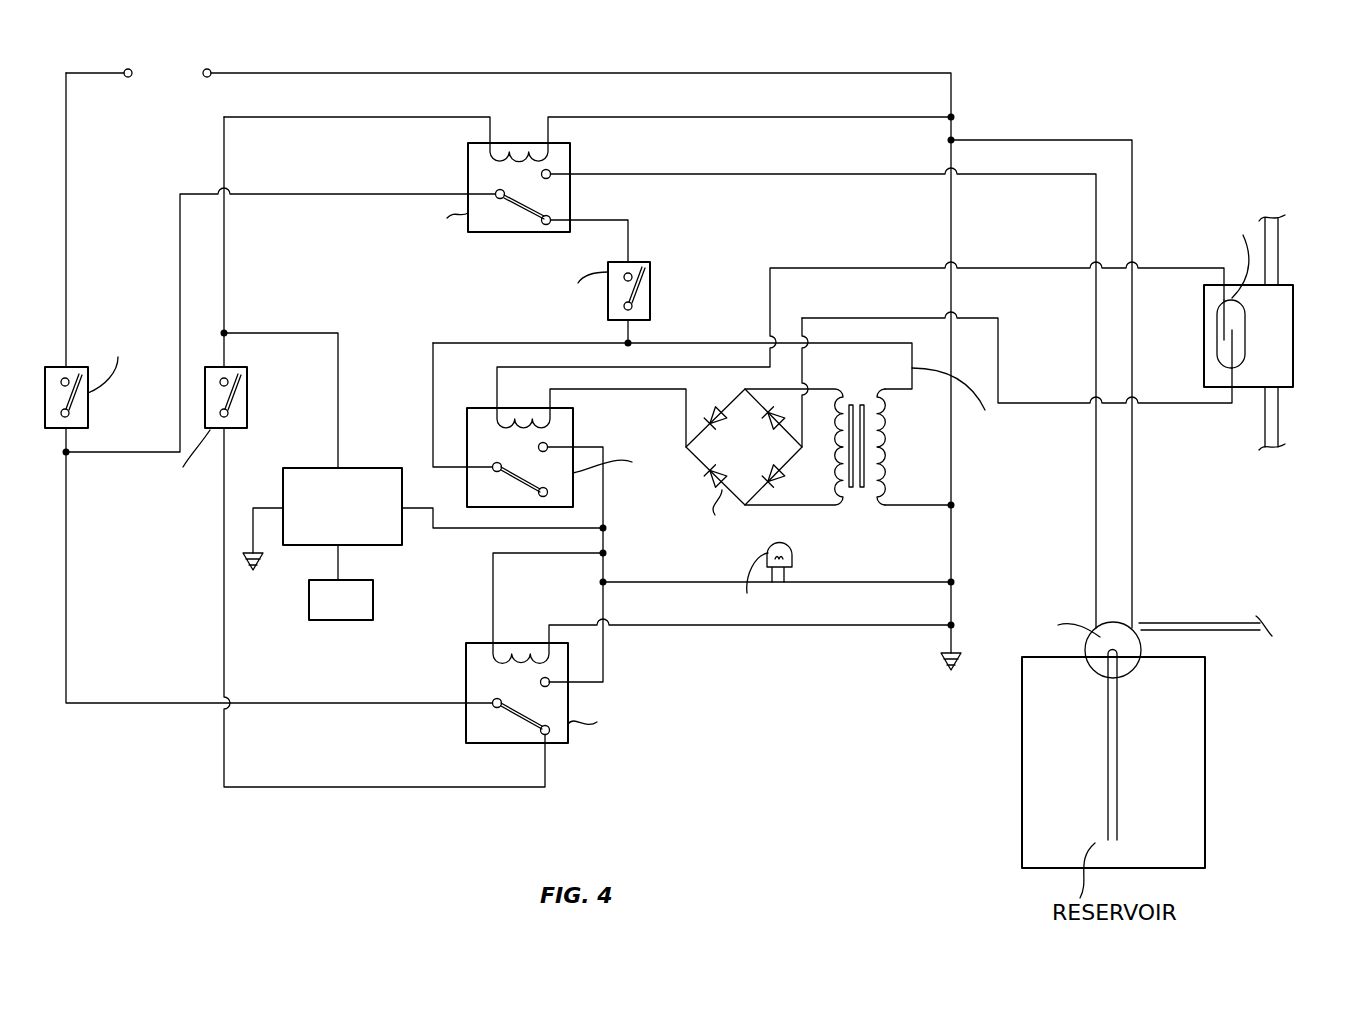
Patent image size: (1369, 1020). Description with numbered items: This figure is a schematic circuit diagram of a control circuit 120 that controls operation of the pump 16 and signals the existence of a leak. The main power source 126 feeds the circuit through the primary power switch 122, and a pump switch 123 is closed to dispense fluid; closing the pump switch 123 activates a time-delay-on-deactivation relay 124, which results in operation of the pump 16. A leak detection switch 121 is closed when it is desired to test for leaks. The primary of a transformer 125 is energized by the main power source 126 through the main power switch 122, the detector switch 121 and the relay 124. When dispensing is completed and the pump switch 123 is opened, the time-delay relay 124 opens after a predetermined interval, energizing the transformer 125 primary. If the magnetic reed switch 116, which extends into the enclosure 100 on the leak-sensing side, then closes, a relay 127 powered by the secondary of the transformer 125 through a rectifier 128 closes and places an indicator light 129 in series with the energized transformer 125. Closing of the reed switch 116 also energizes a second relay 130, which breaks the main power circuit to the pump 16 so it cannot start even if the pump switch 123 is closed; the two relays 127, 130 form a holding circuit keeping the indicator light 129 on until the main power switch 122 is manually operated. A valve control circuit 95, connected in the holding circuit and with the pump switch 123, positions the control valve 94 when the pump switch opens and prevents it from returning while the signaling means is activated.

The control circuit 120 is at (731, 732).
The main power source 126 is at (176, 68).
The time-delay-on-deactivation relay 124 is at (468, 165).
The leak detection switch 121 is at (653, 273).
The primary power switch 122 is at (88, 412).
The pump switch 123 is at (247, 412).
The relay 127 is at (573, 423).
The rectifier 128 is at (747, 420).
The transformer 125 is at (867, 498).
The indicator light 129 is at (793, 552).
The second relay 130 is at (466, 735).
The valve control circuit 95 is at (402, 545).
The control valve 94 is at (335, 605).
The magnetic reed switch 116 is at (1216, 334).
The enclosure 100 is at (1293, 335).
The pump 16 is at (1093, 670).